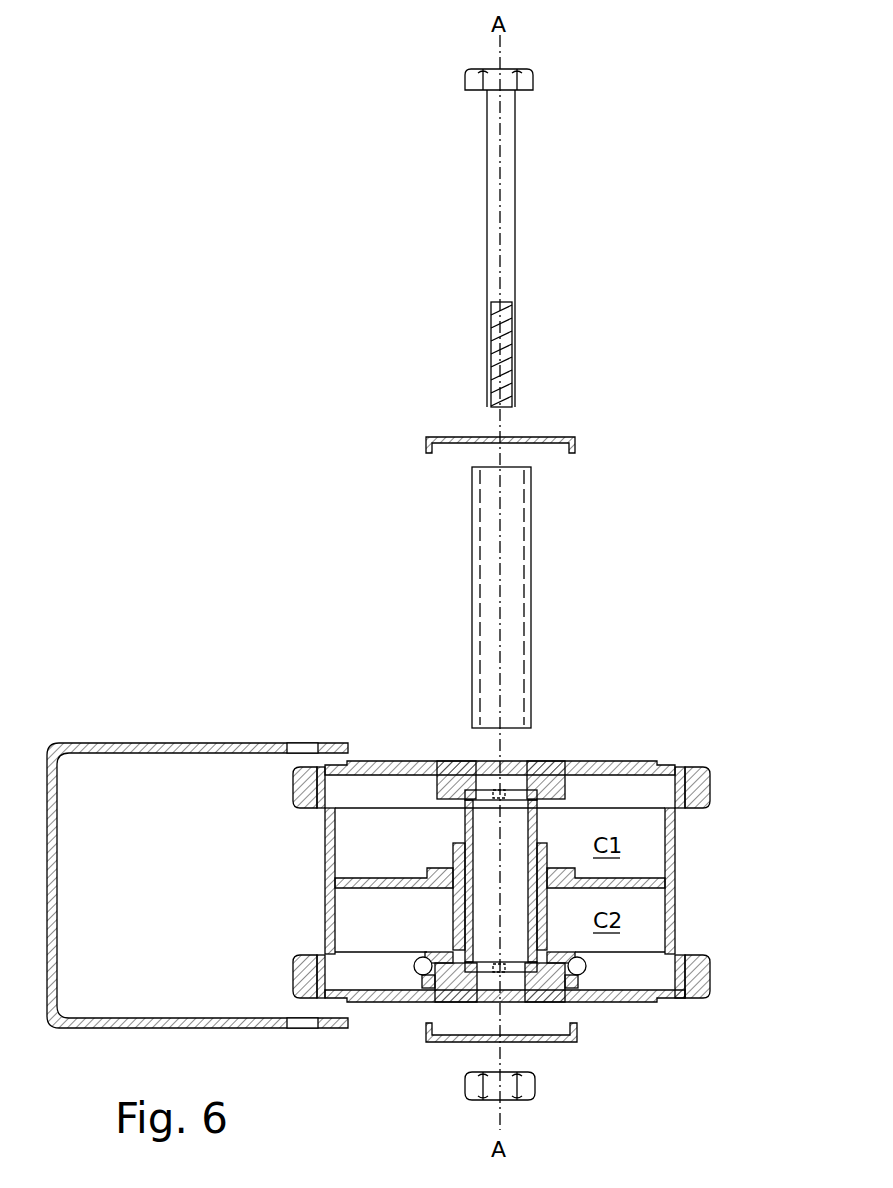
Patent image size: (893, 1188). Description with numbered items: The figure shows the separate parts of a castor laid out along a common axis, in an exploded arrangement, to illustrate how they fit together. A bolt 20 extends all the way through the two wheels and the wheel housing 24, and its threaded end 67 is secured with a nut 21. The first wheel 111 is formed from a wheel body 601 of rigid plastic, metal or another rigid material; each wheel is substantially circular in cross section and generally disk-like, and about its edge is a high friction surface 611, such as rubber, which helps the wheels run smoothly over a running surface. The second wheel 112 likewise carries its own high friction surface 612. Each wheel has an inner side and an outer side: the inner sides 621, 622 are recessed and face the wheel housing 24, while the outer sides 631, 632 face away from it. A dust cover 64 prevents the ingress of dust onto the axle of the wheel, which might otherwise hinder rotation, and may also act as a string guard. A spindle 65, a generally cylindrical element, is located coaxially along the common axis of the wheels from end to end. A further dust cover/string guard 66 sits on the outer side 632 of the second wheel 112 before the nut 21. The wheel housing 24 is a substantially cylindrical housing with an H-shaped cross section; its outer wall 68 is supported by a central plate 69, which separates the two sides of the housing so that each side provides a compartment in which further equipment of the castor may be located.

The bolt 20 is at (535, 80).
The threaded end 67 is at (512, 352).
The dust cover 64 is at (573, 437).
The spindle 65 is at (532, 556).
The outer wall 68 is at (325, 855).
The outer side 631 is at (516, 830).
The wheel body 601 is at (425, 762).
The wheel 111 is at (565, 762).
The high friction surface 611 is at (327, 695).
The wheel housing 24 is at (677, 876).
The inner side 621 is at (654, 811).
The inner side 622 is at (650, 945).
The central plate 69 is at (360, 878).
The outer side 632 is at (529, 1016).
The wheel 112 is at (620, 1002).
The high friction surface 612 is at (710, 998).
The dust cover/string guard 66 is at (575, 1042).
The nut 21 is at (533, 1088).